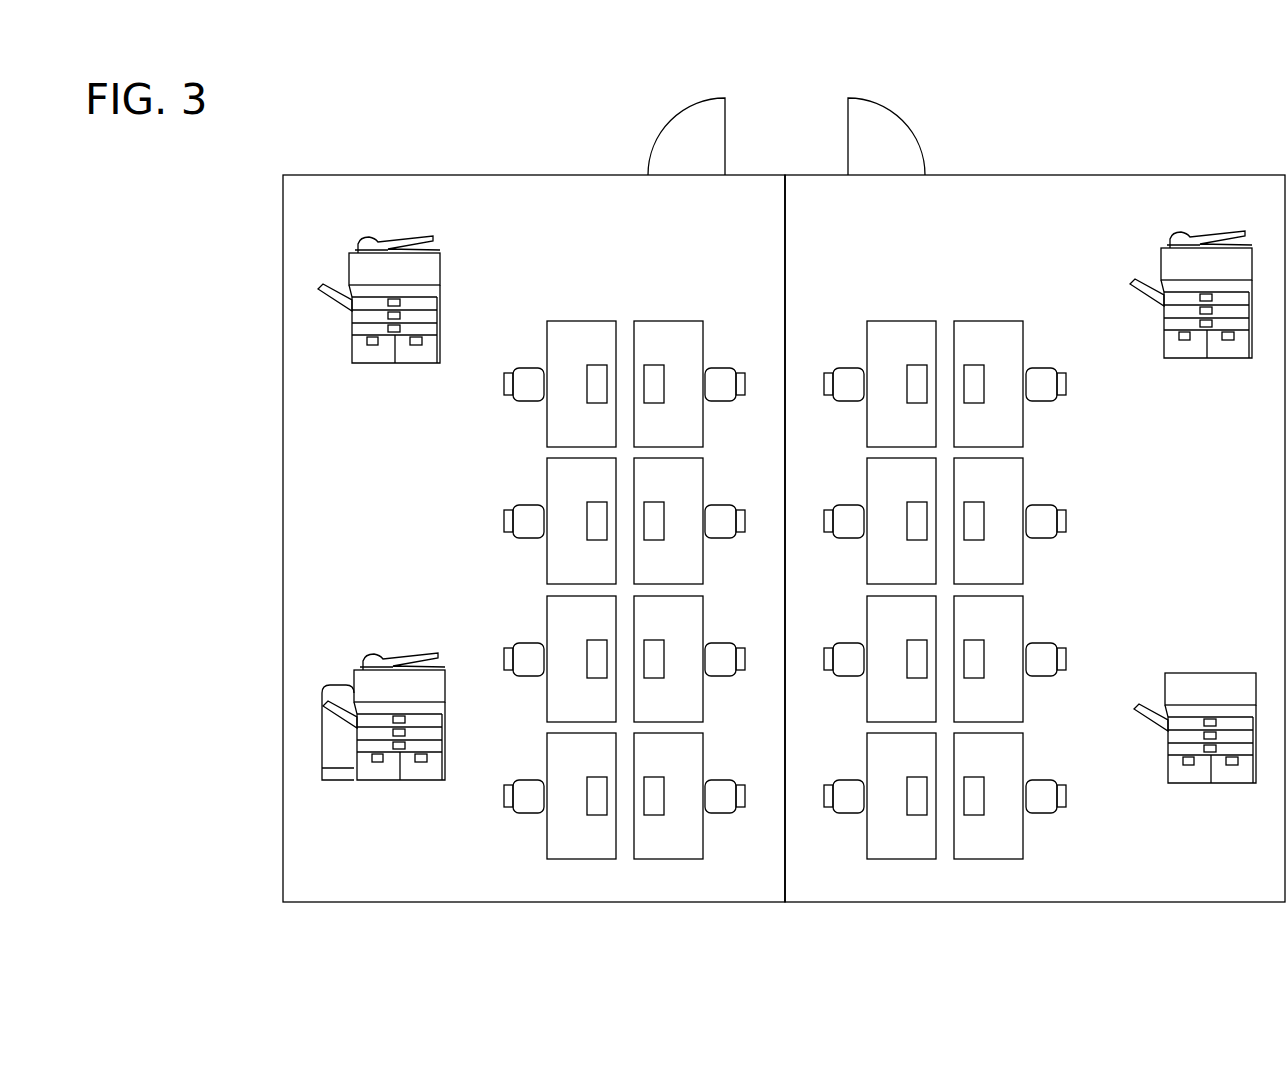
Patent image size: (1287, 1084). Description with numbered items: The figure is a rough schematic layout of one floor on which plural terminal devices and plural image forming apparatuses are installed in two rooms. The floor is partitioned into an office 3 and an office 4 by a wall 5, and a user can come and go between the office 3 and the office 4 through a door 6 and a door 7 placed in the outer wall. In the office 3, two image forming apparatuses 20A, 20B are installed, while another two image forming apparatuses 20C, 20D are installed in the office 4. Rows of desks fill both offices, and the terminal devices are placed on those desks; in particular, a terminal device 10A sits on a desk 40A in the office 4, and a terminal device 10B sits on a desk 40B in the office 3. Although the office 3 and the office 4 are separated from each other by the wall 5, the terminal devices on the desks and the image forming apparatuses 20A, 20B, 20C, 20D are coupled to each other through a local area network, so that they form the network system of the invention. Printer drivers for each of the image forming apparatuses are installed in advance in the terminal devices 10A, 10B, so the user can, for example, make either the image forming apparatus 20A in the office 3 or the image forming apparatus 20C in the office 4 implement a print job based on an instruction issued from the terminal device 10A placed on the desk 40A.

The office 3 is at (470, 175).
The office 4 is at (1167, 175).
The wall 5 is at (786, 265).
The door 6 is at (660, 130).
The door 7 is at (913, 130).
The image forming apparatus 20A is at (399, 656).
The image forming apparatus 20B is at (397, 240).
The image forming apparatus 20C is at (1206, 232).
The image forming apparatus 20D is at (1210, 672).
The desk 40A is at (1005, 482).
The desk 40B is at (565, 614).
The terminal device 10A is at (973, 531).
The terminal device 10B is at (583, 662).